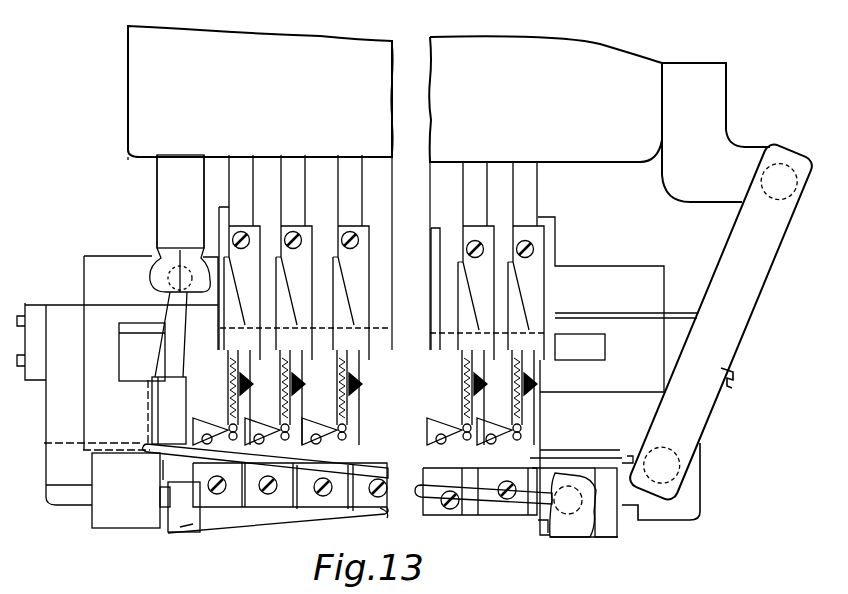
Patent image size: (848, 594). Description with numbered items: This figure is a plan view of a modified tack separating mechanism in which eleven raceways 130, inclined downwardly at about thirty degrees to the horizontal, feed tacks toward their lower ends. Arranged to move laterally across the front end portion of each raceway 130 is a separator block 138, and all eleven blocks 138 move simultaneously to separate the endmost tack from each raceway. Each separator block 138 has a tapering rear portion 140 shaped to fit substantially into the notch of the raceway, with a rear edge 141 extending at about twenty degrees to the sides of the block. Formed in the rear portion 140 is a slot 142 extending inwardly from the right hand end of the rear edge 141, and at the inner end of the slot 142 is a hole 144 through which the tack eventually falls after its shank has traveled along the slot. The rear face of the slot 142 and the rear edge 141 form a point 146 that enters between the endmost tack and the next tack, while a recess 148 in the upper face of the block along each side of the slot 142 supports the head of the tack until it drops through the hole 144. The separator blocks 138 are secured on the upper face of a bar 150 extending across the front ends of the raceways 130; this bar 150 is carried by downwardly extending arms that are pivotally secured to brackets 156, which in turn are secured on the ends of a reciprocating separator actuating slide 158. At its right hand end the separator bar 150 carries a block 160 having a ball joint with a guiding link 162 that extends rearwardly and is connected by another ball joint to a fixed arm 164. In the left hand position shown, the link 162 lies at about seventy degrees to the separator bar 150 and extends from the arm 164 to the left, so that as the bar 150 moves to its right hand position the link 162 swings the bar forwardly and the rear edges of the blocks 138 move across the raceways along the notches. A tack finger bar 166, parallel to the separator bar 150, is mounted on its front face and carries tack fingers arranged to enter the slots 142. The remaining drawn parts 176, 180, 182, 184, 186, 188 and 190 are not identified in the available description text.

The raceway 130 is at (258, 405).
The separator block 138 is at (200, 483).
The tapering rear portion 140 is at (200, 428).
The rear edge 141 is at (313, 430).
The slot 142 is at (323, 440).
The hole 144 is at (268, 442).
The point 146 is at (272, 432).
The recess 148 is at (245, 438).
The bar 150 is at (180, 522).
The bracket 156 is at (728, 390).
The separator actuating slide 158 is at (676, 328).
The block 160 is at (685, 512).
The guiding link 162 is at (740, 323).
The fixed arm 164 is at (720, 100).
The tack finger bar 166 is at (122, 517).
The plate 176 is at (220, 525).
The bracket 180 is at (612, 530).
The cam 182 is at (570, 513).
The bar 184 is at (313, 463).
The rod 186 is at (170, 345).
The rod head 188 is at (166, 280).
The plunger 190 is at (167, 184).